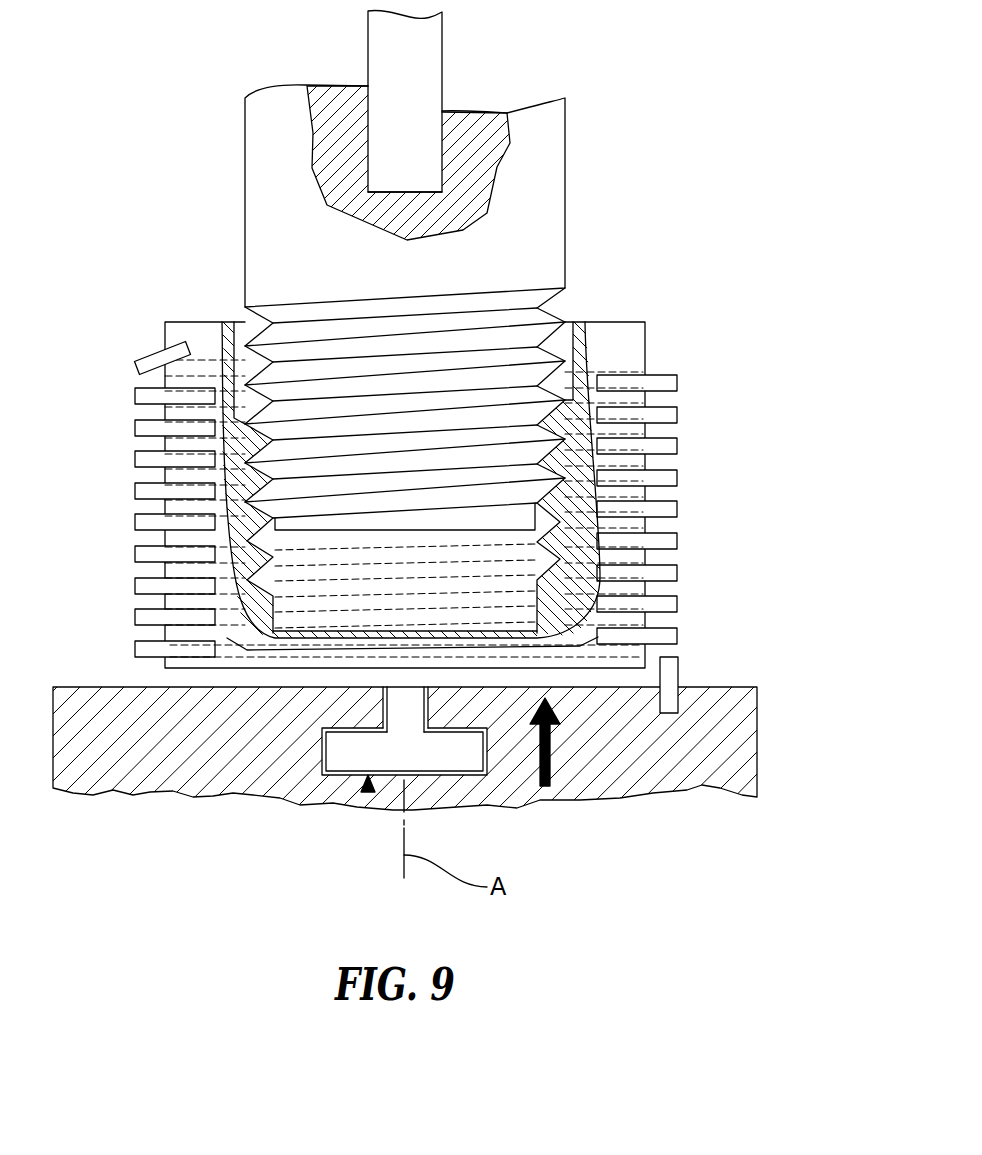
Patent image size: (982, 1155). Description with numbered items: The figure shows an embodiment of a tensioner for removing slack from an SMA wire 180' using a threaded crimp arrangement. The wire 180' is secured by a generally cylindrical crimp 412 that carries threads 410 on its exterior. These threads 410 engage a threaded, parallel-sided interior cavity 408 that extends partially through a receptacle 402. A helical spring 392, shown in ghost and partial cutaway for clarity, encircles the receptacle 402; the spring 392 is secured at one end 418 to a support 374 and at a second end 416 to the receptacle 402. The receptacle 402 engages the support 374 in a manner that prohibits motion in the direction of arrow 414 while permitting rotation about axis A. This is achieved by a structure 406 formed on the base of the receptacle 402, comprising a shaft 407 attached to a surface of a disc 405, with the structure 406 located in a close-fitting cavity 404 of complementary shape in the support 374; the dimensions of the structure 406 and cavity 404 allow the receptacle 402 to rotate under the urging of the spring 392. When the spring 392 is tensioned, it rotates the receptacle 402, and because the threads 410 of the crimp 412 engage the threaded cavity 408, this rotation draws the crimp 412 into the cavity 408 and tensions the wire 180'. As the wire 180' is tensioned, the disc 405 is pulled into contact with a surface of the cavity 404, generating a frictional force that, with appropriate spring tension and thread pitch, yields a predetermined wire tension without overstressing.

The SMA wire 180' is at (465, 101).
The crimp 412 is at (365, 266).
The second end 416 is at (192, 352).
The threads 410 is at (552, 320).
The interior cavity 408 is at (564, 346).
The receptacle 402 is at (647, 353).
The helical spring 392 is at (677, 632).
The support 374 is at (650, 761).
The one end 418 is at (683, 700).
The arrow 414 is at (548, 763).
The shaft 407 is at (433, 702).
The cavity 404 is at (325, 777).
The disc 405 is at (348, 750).
The structure 406 is at (368, 792).